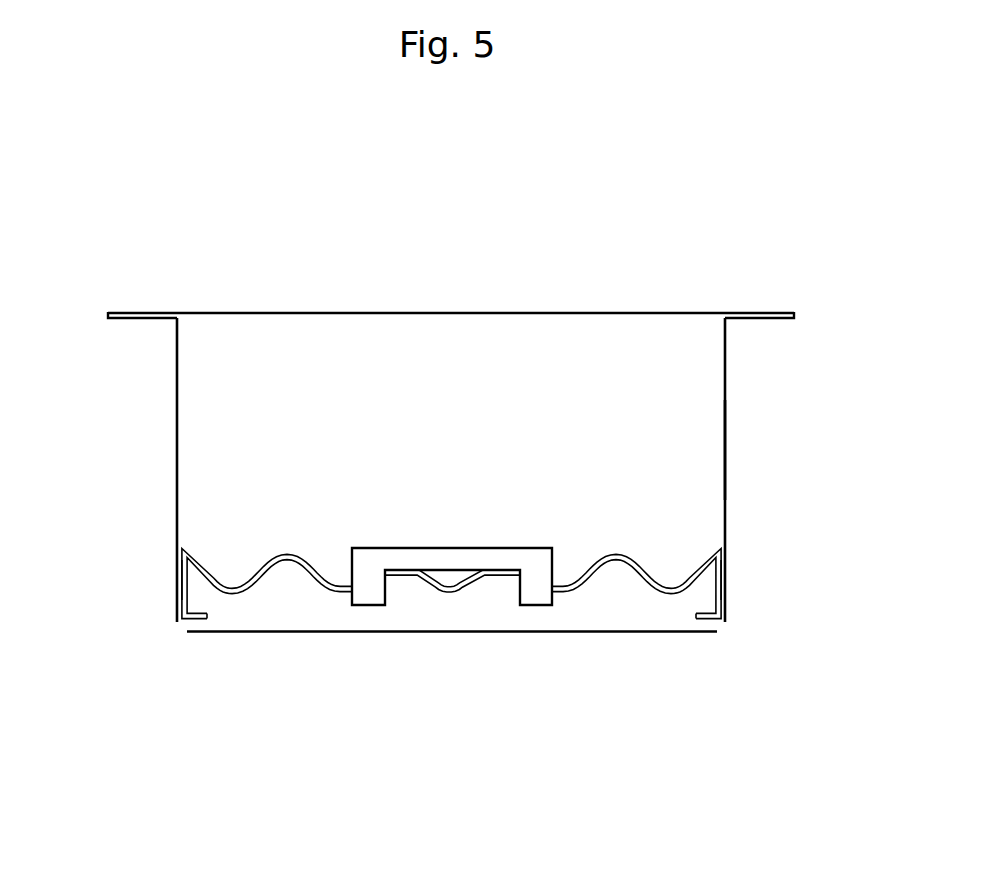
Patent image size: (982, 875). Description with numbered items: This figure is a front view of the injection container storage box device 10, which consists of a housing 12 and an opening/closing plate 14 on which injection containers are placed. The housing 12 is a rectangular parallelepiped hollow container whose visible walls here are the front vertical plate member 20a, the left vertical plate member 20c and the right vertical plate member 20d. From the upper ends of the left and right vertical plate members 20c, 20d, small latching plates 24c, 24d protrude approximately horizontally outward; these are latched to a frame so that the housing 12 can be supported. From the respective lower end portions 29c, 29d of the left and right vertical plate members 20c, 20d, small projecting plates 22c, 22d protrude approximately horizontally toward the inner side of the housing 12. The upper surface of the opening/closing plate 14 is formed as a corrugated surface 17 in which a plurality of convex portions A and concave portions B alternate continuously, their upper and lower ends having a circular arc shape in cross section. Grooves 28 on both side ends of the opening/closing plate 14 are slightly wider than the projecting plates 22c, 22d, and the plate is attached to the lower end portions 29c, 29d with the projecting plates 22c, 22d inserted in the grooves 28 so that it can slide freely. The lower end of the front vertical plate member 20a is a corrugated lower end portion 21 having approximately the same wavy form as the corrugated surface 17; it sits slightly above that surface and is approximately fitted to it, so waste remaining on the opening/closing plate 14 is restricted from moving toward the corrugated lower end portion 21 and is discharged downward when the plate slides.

The injection container storage box device 10 is at (152, 258).
The housing 12 is at (726, 396).
The opening/closing plate 14 is at (410, 612).
The corrugated surface 17 is at (590, 578).
The front vertical plate member 20a is at (706, 443).
The left vertical plate member 20c is at (177, 432).
The right vertical plate member 20d is at (726, 512).
The corrugated lower end portion 21 is at (566, 554).
The projecting plate 22c is at (181, 630).
The projecting plate 22d is at (719, 630).
The latching plate 24c is at (140, 312).
The latching plate 24d is at (764, 312).
The groove 28 is at (208, 617).
The lower end portion 29c is at (153, 587).
The lower end portion 29d is at (748, 585).
The convex portion A is at (287, 555).
The concave portion B is at (343, 592).